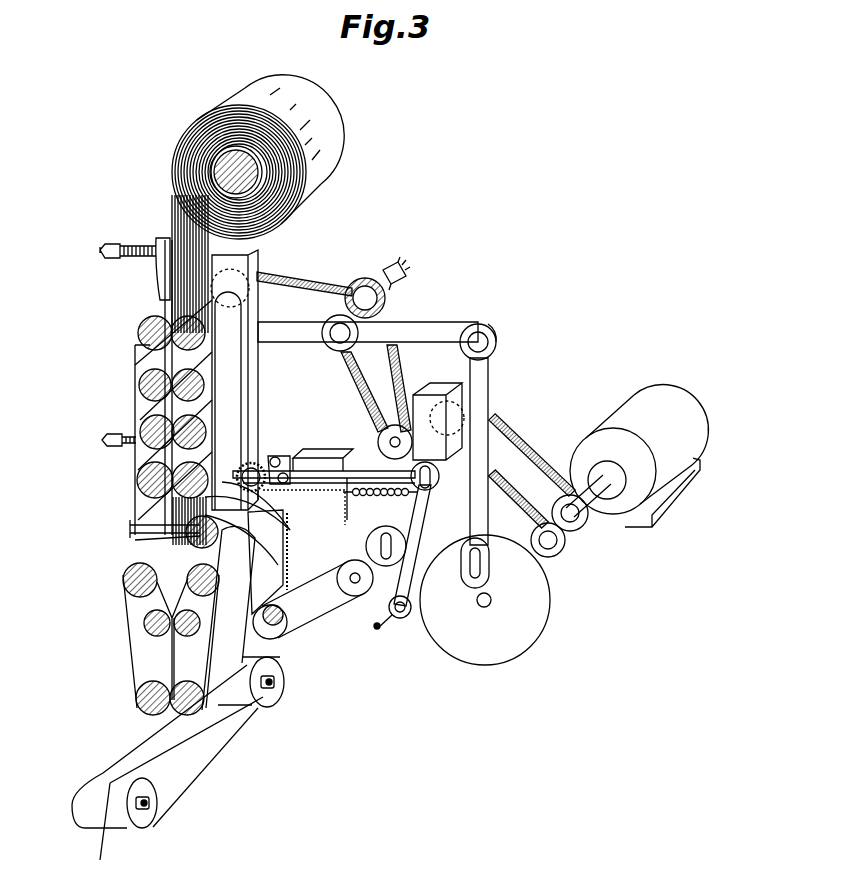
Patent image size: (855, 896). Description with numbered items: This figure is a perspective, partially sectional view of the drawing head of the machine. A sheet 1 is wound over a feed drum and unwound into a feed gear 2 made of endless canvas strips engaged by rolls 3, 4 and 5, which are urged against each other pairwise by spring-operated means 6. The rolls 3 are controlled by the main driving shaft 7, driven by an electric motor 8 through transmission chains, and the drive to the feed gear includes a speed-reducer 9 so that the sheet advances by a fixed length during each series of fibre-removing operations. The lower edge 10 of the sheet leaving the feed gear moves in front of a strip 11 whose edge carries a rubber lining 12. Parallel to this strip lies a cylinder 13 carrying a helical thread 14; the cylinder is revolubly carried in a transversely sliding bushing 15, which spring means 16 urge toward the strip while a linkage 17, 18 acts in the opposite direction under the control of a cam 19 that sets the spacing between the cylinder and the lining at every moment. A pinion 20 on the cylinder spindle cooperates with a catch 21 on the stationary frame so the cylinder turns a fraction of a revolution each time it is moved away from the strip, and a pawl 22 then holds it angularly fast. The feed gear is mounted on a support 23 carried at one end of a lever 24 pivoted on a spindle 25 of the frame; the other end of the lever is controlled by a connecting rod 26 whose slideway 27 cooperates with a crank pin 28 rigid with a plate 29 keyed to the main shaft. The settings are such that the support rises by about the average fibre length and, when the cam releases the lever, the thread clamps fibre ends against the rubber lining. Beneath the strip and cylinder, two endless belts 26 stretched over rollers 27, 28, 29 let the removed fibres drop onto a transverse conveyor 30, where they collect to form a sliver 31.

The sheet 1 is at (305, 150).
The feed gear 2 is at (232, 318).
The rolls 3 is at (143, 333).
The rolls 4 is at (148, 425).
The rolls 5 is at (145, 483).
The spring-operated means 6 is at (132, 245).
The main driving shaft 7 is at (598, 483).
The motor 8 is at (655, 395).
The speed-reducer 9 is at (430, 392).
The lower edge 10 is at (150, 540).
The strip 11 is at (175, 525).
The rubber lining 12 is at (160, 537).
The cylinder 13 is at (283, 562).
The helical thread 14 is at (275, 537).
The bushing 15 is at (295, 482).
The spring means 16 is at (360, 500).
The lever 17 is at (385, 498).
The linkage 18 is at (410, 546).
The cam 19 is at (372, 575).
The pinion 20 is at (245, 492).
The catch 21 is at (262, 462).
The pawl 22 is at (283, 480).
The support 23 is at (262, 410).
The lever 24 is at (418, 330).
The spindle 25 is at (398, 290).
The connecting rod 26 is at (480, 415).
The slideway 27 is at (470, 580).
The crank pin 28 is at (485, 565).
The plate 29 is at (490, 655).
The transverse conveyor 30 is at (103, 765).
The sliver 31 is at (140, 753).